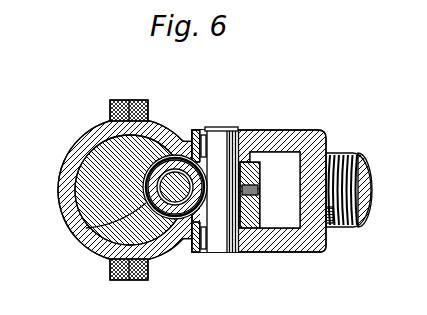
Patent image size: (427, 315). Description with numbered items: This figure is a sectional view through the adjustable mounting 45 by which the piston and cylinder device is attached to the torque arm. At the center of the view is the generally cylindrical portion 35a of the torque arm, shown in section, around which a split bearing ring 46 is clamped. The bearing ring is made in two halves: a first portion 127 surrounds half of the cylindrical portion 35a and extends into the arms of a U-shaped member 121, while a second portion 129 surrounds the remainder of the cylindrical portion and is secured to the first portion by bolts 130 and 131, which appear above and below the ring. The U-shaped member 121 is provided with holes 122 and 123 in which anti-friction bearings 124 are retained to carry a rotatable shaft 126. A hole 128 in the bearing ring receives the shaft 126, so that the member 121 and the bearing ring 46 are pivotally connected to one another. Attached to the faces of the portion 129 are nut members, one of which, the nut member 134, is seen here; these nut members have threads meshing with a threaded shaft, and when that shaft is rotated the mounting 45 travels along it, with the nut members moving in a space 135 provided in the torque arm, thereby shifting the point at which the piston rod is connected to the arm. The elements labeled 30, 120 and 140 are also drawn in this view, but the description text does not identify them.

The split bearing ring 46 is at (116, 188).
The second portion of the bearing ring 129 is at (96, 141).
The bolt 130 is at (124, 110).
The bolt 131 is at (130, 281).
The cylindrical portion 35a is at (110, 252).
The space 135 is at (88, 232).
The first portion of the bearing ring 127 is at (163, 130).
The mounting 45 is at (267, 182).
The threaded nipple 30 is at (369, 158).
The valve housing 120 is at (264, 187).
The U-shaped member 121 is at (308, 243).
The hole 122 is at (198, 253).
The retaining clip 140 is at (184, 131).
The rotatable shaft 126 is at (218, 246).
The anti-friction bearing 124 is at (247, 254).
The hole 123 is at (204, 180).
The nut member 134 is at (205, 184).
The hole 128 is at (257, 198).